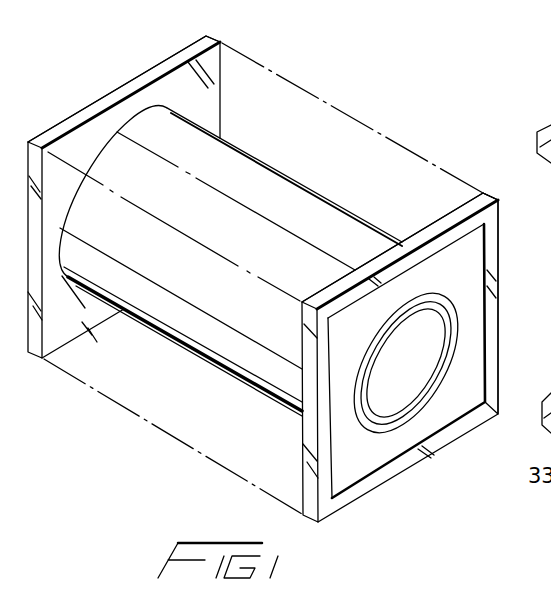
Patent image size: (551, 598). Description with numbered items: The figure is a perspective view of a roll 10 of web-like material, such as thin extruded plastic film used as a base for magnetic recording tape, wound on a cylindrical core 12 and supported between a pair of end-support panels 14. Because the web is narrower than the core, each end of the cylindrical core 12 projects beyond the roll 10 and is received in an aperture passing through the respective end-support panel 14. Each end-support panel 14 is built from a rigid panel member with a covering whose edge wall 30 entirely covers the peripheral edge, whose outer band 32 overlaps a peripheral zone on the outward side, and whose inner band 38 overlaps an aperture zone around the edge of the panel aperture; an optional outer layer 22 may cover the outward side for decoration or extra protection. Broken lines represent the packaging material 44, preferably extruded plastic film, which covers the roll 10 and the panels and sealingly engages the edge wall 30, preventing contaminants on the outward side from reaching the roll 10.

The roll 10 is at (278, 190).
The cylindrical core 12 is at (437, 373).
The end-support panel 14 is at (155, 63).
The outer layer 22 is at (465, 303).
The edge wall 30 is at (70, 127).
The outer band 32 is at (488, 258).
The inner band 38 is at (453, 337).
The packaging material 44 is at (270, 72).